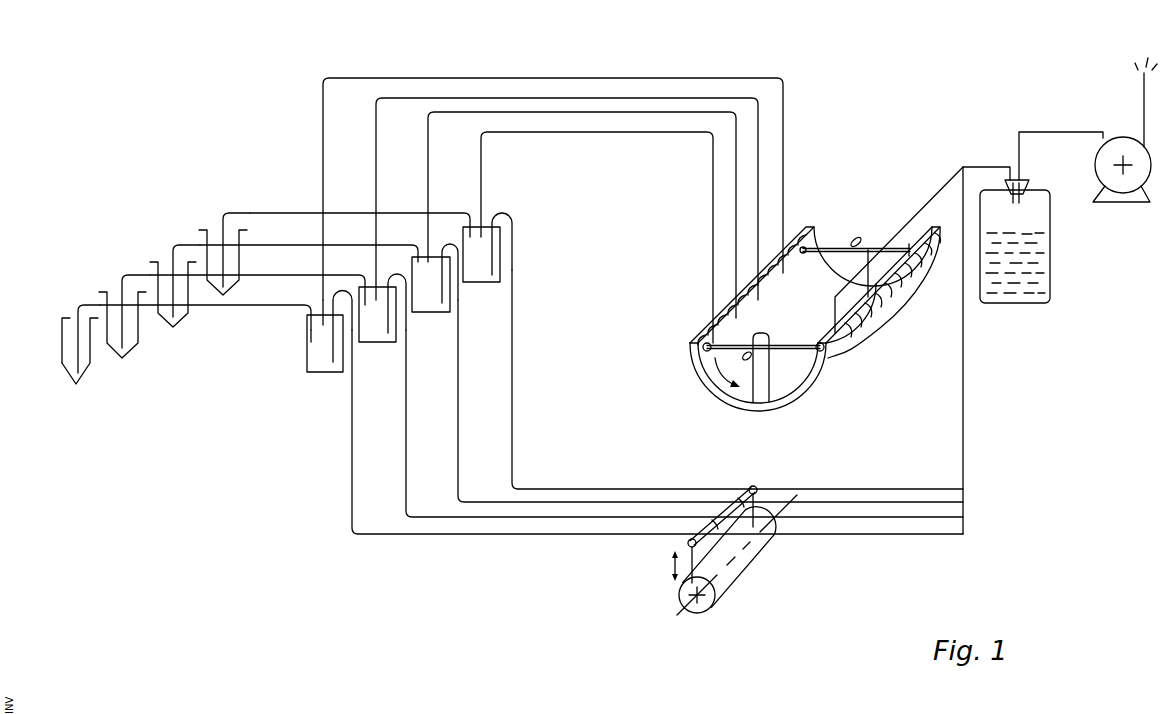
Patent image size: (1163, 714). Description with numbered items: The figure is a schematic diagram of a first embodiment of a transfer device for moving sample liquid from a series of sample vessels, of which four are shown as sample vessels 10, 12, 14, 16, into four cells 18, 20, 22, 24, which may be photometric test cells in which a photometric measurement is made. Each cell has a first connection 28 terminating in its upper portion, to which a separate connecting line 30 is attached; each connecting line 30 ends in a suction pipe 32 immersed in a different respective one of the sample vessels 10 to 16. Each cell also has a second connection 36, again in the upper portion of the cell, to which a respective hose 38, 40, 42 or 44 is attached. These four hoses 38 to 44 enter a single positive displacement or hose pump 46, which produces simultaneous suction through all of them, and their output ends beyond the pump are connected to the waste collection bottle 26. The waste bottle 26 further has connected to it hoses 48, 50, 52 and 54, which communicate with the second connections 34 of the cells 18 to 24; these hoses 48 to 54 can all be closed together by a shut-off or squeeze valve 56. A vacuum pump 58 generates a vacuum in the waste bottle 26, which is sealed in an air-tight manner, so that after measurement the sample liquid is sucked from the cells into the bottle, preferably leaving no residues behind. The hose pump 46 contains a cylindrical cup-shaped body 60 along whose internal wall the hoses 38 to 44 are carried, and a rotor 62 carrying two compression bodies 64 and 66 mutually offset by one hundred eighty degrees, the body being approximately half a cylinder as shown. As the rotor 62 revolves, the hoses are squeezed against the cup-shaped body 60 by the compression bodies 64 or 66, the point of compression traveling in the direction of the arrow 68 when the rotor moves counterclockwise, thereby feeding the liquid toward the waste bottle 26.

The sample vessel 10 is at (90, 377).
The sample vessel 12 is at (138, 342).
The sample vessel 14 is at (184, 317).
The sample vessel 16 is at (240, 280).
The cell 18 is at (340, 371).
The cell 20 is at (396, 336).
The cell 22 is at (450, 304).
The cell 24 is at (500, 266).
The waste collection bottle 26 is at (1045, 272).
The first connection 28 is at (305, 338).
The connecting line 30 is at (277, 306).
The suction pipe 32 is at (65, 367).
The second connection 34 is at (333, 350).
The second connection 36 is at (323, 323).
The hose 38 is at (472, 79).
The hose 40 is at (512, 97).
The hose 42 is at (547, 113).
The hose 44 is at (582, 133).
The hose pump 46 is at (815, 221).
The hose 48 is at (422, 535).
The hose 50 is at (459, 518).
The hose 52 is at (517, 502).
The hose 54 is at (557, 489).
The squeeze valve 56 is at (663, 628).
The vacuum pump 58 is at (1117, 145).
The cylindrical cup-shaped body 60 is at (828, 368).
The rotor 62 is at (866, 233).
The compression body 64 is at (806, 241).
The compression body 66 is at (824, 347).
The arrow 68 is at (720, 356).